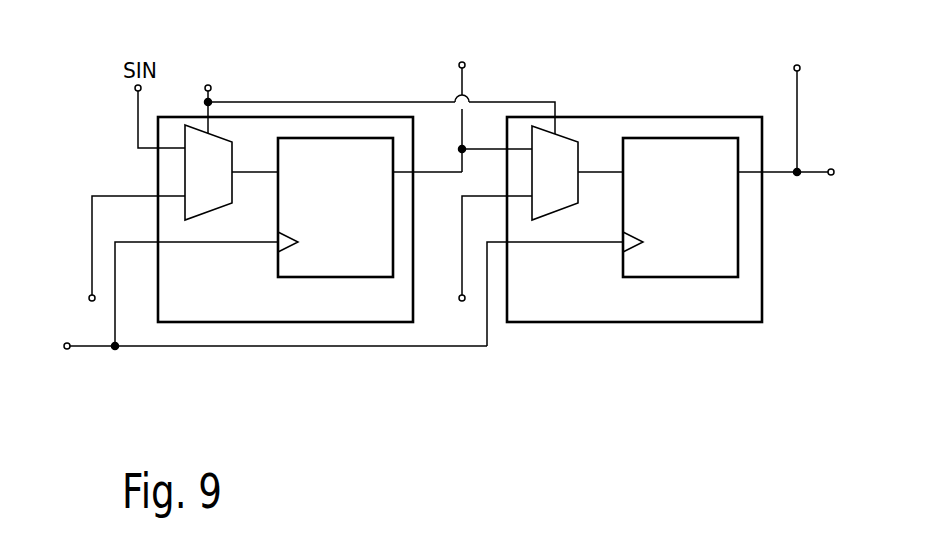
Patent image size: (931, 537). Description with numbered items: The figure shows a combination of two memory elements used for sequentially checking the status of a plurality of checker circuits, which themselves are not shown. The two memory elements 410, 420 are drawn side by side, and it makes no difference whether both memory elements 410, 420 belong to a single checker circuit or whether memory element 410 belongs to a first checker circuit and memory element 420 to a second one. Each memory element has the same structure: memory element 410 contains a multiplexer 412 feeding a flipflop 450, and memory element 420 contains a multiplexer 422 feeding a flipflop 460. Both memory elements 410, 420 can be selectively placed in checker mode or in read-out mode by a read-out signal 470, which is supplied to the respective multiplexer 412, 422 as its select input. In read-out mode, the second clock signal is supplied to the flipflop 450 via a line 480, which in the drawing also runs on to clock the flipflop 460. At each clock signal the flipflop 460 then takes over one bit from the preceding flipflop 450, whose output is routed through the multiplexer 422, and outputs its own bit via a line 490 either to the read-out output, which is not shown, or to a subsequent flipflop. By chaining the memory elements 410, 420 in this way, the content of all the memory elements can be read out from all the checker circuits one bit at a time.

The memory element 410 is at (298, 331).
The multiplexer 412 is at (176, 177).
The memory element 420 is at (597, 331).
The multiplexer 422 is at (573, 130).
The flipflop 450 is at (362, 279).
The flipflop 460 is at (716, 279).
The read-out signal 470 is at (209, 85).
The line 480 is at (93, 349).
The line 490 is at (810, 170).